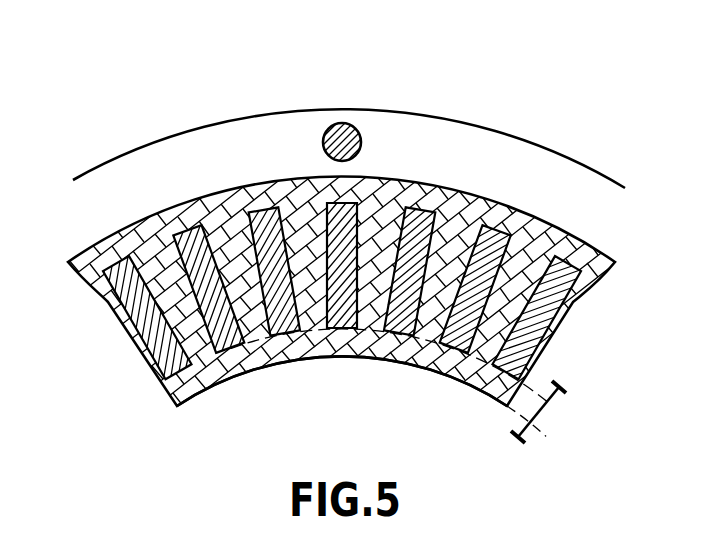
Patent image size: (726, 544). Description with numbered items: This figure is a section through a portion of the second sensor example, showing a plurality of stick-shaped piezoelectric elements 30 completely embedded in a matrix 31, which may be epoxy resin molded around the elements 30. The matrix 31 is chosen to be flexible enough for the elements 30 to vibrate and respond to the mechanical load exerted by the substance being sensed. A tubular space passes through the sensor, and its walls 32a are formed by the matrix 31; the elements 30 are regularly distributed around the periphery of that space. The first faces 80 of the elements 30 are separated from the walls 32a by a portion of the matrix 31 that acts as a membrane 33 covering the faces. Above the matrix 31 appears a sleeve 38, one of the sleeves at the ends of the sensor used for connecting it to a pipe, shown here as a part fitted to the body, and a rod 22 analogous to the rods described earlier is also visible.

The sleeve 38 is at (212, 142).
The rod 22 is at (353, 123).
The matrix 31 is at (467, 203).
The piezoelectric element 30 is at (567, 297).
The first face 80 is at (385, 340).
The wall 32a is at (260, 377).
The membrane 33 is at (549, 418).